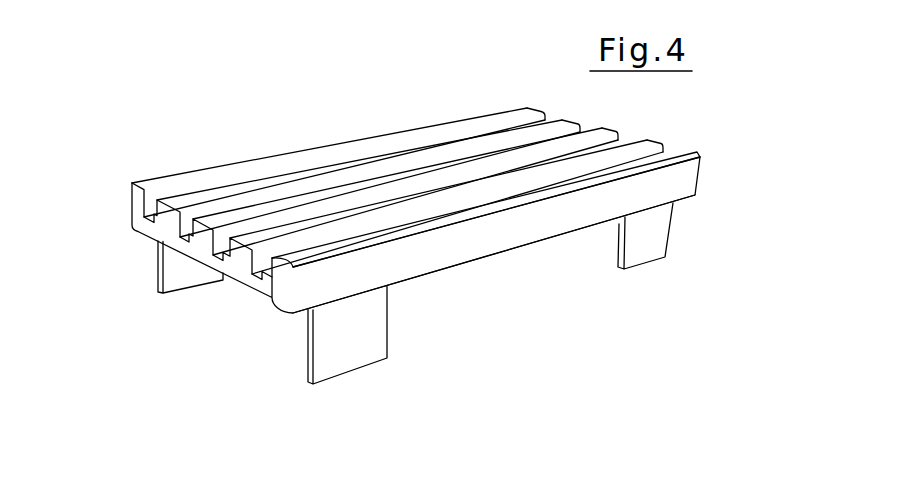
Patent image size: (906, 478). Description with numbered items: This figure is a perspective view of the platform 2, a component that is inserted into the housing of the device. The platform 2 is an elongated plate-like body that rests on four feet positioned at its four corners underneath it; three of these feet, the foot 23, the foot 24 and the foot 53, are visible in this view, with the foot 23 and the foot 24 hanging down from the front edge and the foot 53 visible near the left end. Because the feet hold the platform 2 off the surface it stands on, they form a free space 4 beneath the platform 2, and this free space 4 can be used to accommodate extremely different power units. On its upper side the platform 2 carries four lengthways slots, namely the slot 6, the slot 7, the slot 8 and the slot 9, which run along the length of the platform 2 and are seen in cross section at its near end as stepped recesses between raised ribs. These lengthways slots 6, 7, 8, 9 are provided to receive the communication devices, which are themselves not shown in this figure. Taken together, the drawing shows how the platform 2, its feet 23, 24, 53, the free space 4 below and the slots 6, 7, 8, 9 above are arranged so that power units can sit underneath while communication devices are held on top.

The platform 2 is at (415, 223).
The free space 4 is at (531, 278).
The lengthways slot 6 is at (150, 208).
The lengthways slot 7 is at (182, 223).
The lengthways slot 8 is at (220, 243).
The lengthways slot 9 is at (260, 262).
The foot 23 is at (350, 358).
The foot 24 is at (646, 253).
The foot 53 is at (172, 280).